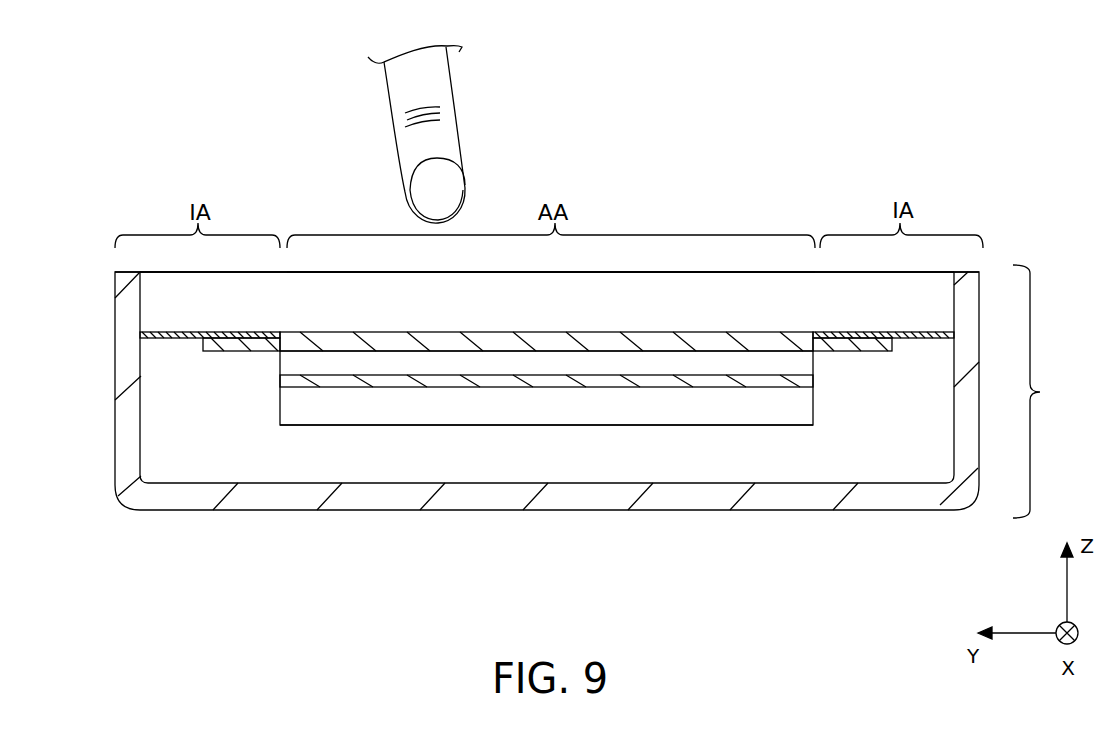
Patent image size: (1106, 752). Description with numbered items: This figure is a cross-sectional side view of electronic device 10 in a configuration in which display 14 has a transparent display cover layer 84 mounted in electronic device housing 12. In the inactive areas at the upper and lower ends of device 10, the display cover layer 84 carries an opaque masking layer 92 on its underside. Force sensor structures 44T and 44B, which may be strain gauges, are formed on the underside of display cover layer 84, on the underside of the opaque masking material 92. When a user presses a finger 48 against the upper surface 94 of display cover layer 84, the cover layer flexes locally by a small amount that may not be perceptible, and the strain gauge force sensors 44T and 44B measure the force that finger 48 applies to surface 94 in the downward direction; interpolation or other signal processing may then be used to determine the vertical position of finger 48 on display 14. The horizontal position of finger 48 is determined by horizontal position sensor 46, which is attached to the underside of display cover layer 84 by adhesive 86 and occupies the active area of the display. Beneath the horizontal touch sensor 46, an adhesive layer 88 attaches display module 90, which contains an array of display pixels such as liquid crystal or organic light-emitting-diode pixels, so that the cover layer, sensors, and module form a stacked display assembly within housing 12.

The electronic device 10 is at (1043, 391).
The electronic device housing 12 is at (880, 500).
The display 14 is at (836, 194).
The force sensor structure 44T is at (238, 349).
The force sensor structure 44B is at (876, 343).
The horizontal position sensor 46 is at (278, 364).
The finger 48 is at (458, 110).
The display cover layer 84 is at (212, 285).
The adhesive 86 is at (702, 340).
The adhesive layer 88 is at (815, 380).
The display module 90 is at (617, 427).
The opaque masking layer 92 is at (165, 340).
The upper surface 94 is at (435, 285).